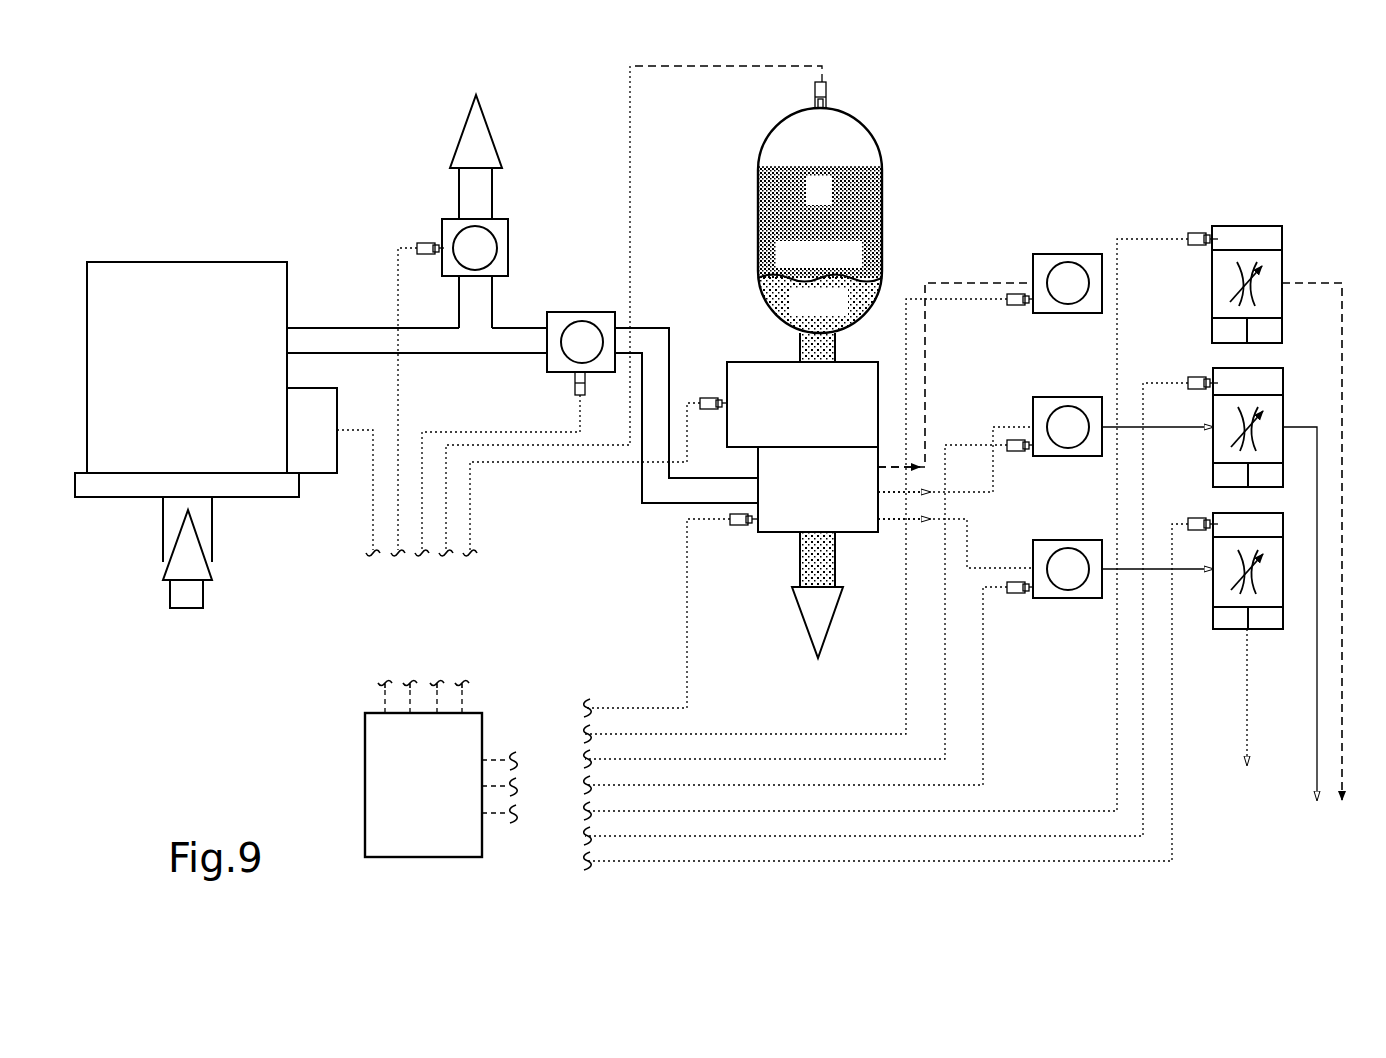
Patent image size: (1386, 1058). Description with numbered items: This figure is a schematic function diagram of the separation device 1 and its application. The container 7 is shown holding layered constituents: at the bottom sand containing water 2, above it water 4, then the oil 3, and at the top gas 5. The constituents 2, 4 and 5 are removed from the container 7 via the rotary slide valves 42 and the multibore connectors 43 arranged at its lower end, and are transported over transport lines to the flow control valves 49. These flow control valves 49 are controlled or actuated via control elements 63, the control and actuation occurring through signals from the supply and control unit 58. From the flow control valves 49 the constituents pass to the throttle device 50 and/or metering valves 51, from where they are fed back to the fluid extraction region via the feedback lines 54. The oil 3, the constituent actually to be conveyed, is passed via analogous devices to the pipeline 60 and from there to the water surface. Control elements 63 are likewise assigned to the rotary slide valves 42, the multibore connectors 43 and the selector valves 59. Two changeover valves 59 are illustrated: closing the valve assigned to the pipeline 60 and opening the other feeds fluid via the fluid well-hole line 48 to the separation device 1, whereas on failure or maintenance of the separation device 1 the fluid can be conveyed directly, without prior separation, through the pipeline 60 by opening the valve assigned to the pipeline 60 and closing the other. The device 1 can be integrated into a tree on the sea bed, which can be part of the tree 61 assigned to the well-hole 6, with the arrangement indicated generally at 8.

The separation device 1 is at (745, 152).
The sand containing water 2 is at (775, 305).
The oil 3 is at (882, 198).
The water 4 is at (870, 252).
The gas 5 is at (862, 158).
The well-hole 6 is at (175, 595).
The container 7 is at (868, 139).
The separation arrangement 8 is at (683, 295).
The rotary slide valves 42 is at (801, 415).
The multibore connectors 43 is at (801, 500).
The fluid well-hole line 48 is at (497, 355).
The flow control valves 49 is at (1069, 254).
The throttle device 50 is at (1268, 446).
The metering valves 51 is at (1286, 240).
The feedback lines 54 is at (835, 561).
The supply and control unit 58 is at (365, 800).
The changeover valves 59 is at (508, 242).
The pipeline 60 is at (462, 185).
The tree 61 is at (237, 262).
The control elements 63 is at (415, 244).